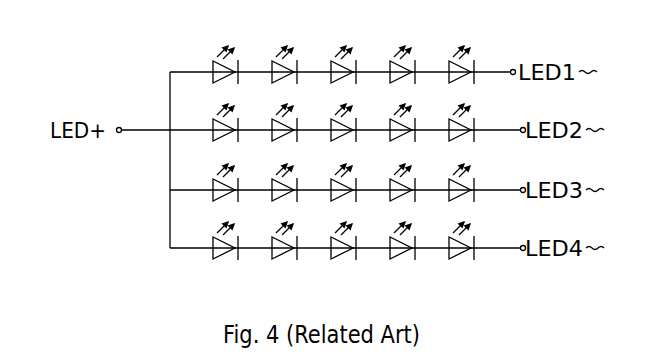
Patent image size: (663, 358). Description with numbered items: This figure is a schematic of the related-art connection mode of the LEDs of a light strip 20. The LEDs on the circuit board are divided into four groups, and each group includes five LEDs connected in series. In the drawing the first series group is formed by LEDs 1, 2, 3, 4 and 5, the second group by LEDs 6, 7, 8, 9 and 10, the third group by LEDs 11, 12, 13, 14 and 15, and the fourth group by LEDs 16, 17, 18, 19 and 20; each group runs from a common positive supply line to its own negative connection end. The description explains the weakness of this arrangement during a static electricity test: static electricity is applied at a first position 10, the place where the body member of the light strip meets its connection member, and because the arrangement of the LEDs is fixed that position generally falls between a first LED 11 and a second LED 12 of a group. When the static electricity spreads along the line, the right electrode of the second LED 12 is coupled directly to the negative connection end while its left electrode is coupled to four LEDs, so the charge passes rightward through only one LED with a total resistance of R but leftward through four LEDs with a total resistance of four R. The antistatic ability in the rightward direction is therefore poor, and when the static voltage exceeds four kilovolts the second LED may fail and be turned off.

The light emitting diode 1 is at (225, 53).
The light emitting diode 2 is at (284, 53).
The light emitting diode 3 is at (343, 53).
The light emitting diode 4 is at (402, 53).
The light emitting diode 5 is at (461, 53).
The light emitting diode 6 is at (225, 111).
The light emitting diode 7 is at (284, 111).
The light emitting diode 8 is at (343, 111).
The light emitting diode 9 is at (402, 111).
The first position 10 is at (461, 111).
The first LED 11 is at (225, 171).
The second LED 12 is at (284, 171).
The light emitting diode 13 is at (343, 171).
The light emitting diode 14 is at (402, 171).
The light emitting diode 15 is at (461, 171).
The light emitting diode 16 is at (225, 229).
The light emitting diode 17 is at (284, 229).
The light emitting diode 18 is at (343, 229).
The light emitting diode 19 is at (402, 229).
The light strip 20 is at (461, 229).